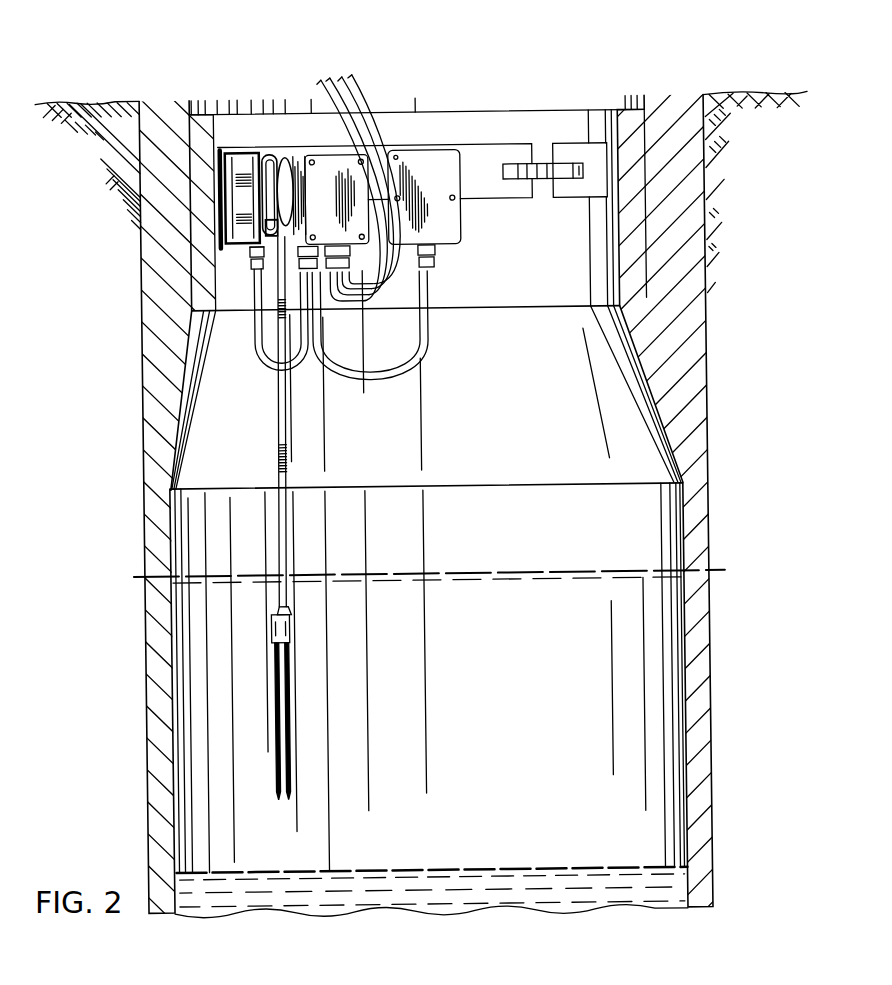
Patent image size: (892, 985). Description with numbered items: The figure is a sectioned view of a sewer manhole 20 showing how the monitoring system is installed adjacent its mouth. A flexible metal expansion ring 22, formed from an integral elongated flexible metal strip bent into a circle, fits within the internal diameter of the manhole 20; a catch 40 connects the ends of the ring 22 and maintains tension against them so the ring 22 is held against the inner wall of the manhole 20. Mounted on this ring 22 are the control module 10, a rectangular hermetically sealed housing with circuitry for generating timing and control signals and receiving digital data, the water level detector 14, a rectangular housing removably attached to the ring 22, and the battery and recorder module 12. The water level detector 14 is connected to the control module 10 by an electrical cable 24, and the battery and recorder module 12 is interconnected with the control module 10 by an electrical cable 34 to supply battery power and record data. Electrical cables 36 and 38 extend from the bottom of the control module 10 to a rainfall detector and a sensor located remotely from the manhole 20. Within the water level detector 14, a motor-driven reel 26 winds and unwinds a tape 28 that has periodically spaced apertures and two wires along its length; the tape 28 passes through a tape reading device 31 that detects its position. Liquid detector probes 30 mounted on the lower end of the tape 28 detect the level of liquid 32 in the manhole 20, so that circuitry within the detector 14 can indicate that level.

The control module 10 is at (340, 158).
The battery and recorder module 12 is at (418, 155).
The water level detector 14 is at (251, 150).
The sewer manhole 20 is at (704, 94).
The flexible metal expansion ring 22 is at (496, 148).
The electrical cable 24 is at (247, 393).
The reel 26 is at (291, 152).
The tape 28 is at (284, 423).
The liquid detector probes 30 is at (286, 767).
The tape reading device 31 is at (249, 246).
The liquid 32 is at (362, 866).
The electrical cable 34 is at (431, 333).
The electrical cable 36 is at (327, 77).
The electrical cable 38 is at (357, 75).
The catch 40 is at (548, 150).